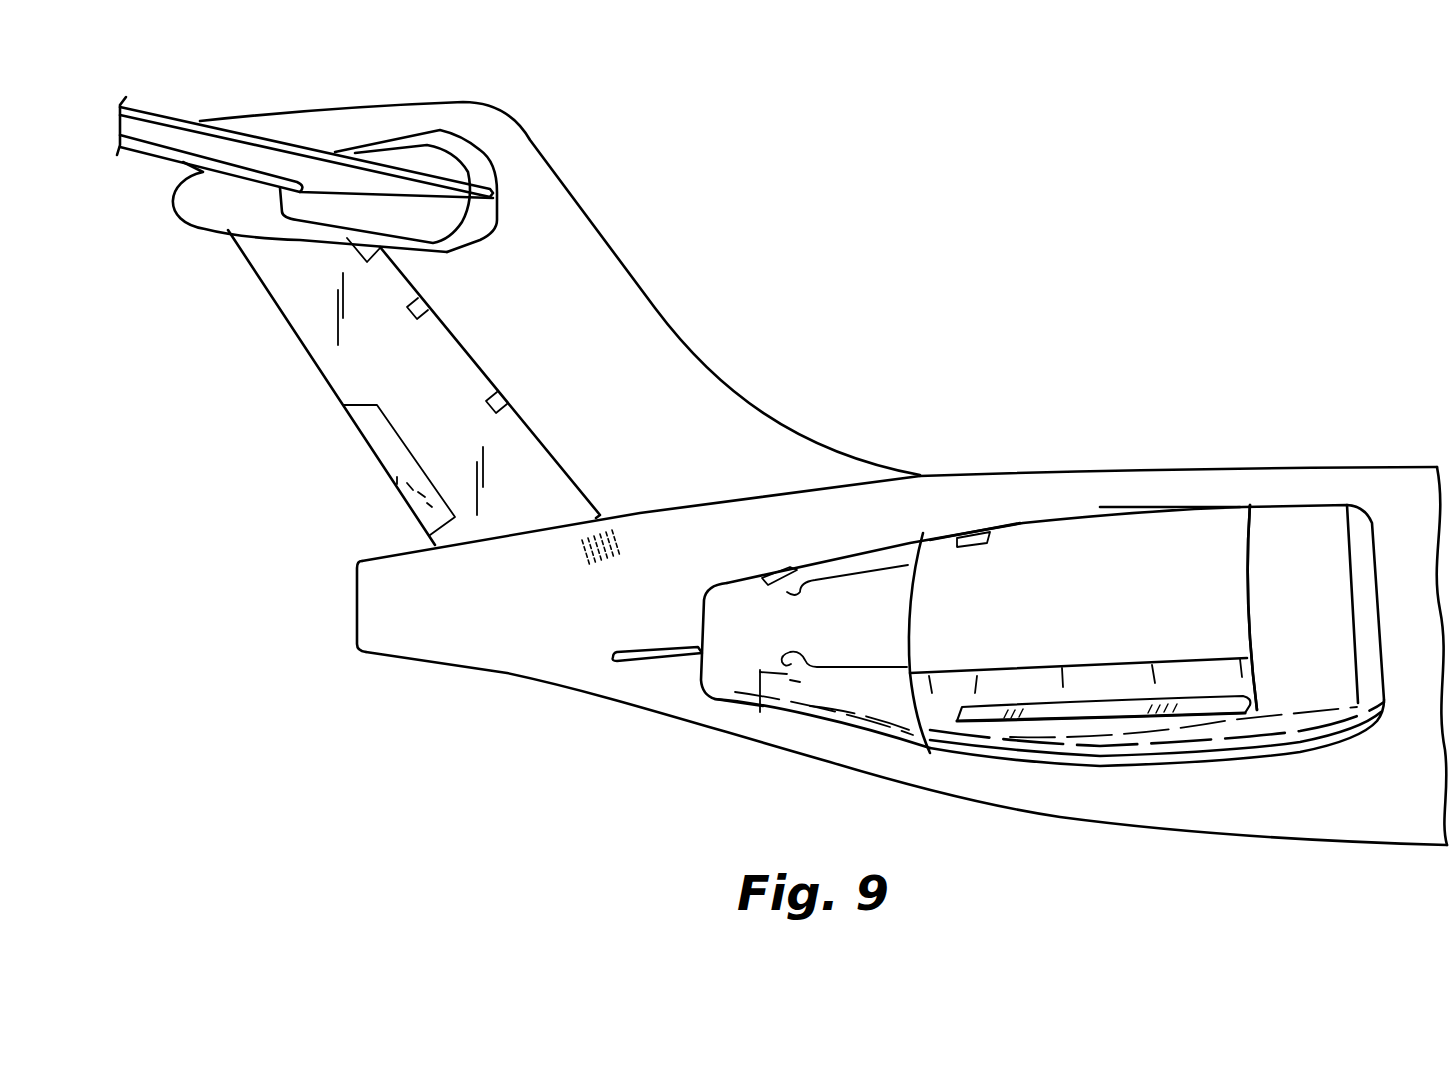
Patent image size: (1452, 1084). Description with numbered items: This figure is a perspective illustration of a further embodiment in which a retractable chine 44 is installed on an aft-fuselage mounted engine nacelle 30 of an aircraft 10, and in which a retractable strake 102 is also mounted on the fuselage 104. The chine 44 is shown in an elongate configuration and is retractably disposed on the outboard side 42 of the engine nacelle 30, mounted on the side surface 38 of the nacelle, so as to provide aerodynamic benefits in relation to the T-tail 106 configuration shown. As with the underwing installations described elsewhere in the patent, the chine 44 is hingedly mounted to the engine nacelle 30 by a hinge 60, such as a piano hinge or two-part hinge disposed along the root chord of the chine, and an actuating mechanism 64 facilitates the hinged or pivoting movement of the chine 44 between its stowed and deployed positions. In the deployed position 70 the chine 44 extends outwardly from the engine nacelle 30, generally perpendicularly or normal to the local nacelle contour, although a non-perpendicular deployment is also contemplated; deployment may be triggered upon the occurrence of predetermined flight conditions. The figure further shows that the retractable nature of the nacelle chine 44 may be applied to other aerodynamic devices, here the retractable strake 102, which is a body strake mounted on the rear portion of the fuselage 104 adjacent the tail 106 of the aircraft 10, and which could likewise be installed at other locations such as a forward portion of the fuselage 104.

The aircraft 10 is at (852, 404).
The engine nacelle 30 is at (1197, 557).
The side surface 38 is at (1103, 545).
The outboard side 42 is at (1050, 570).
The chine 44 is at (1113, 713).
The hinge 60 is at (997, 703).
The actuating mechanism 64 is at (1200, 697).
The deployed position 70 is at (1253, 706).
The retractable strake 102 is at (658, 664).
The fuselage 104 is at (935, 507).
The tail 106 is at (588, 225).